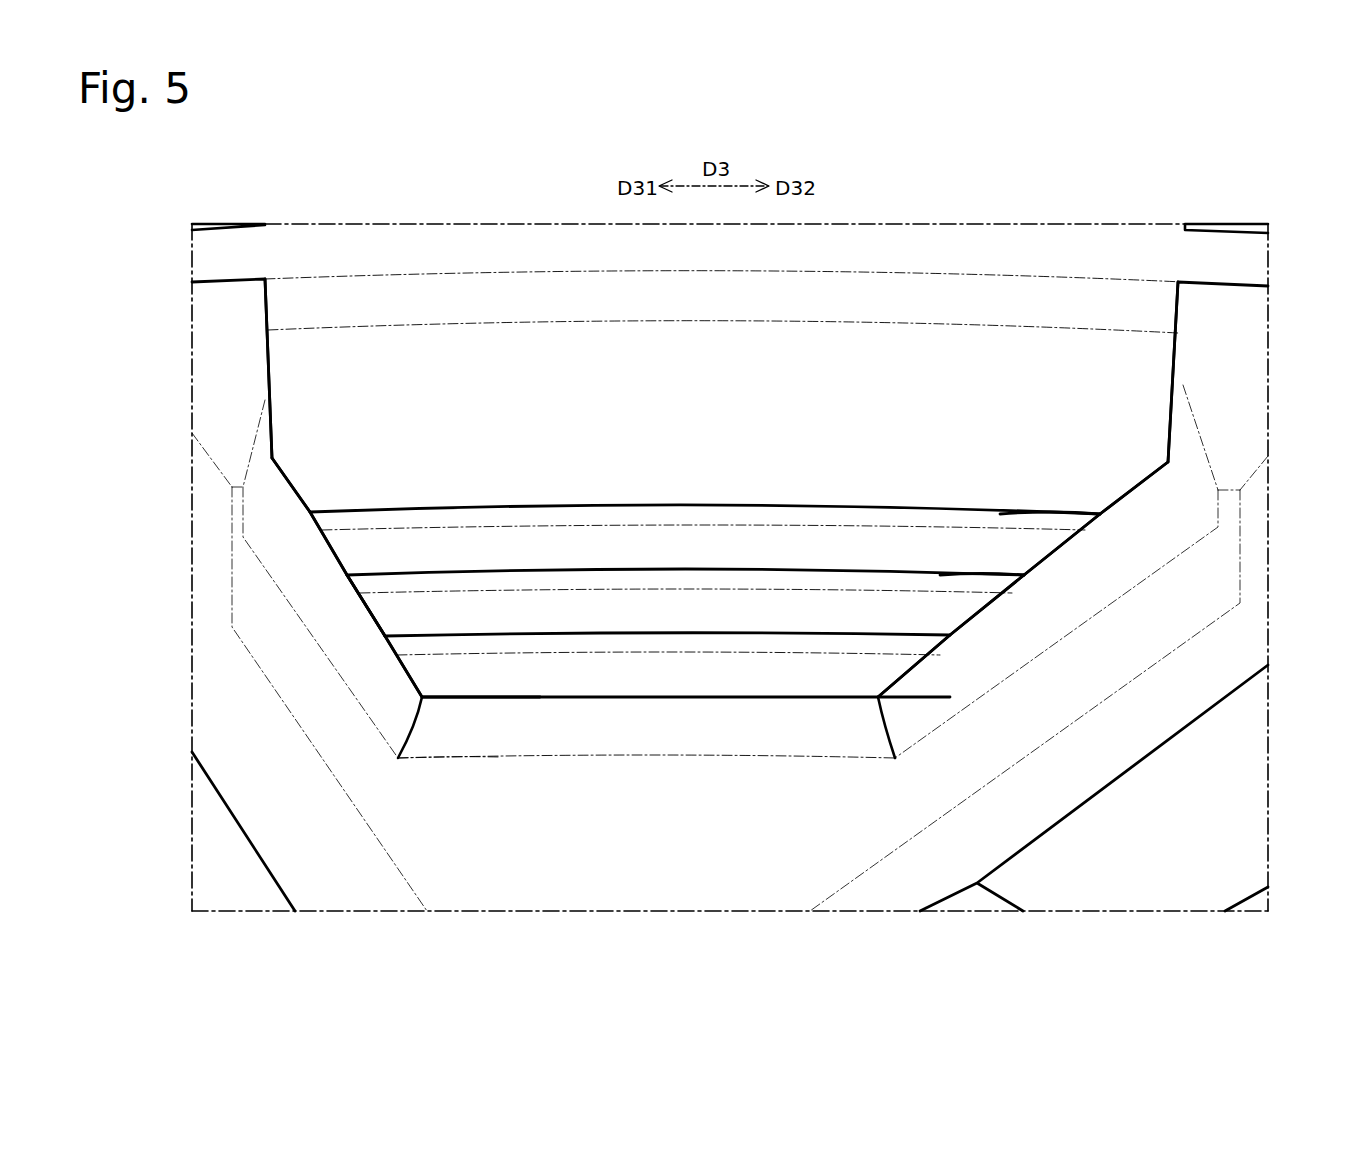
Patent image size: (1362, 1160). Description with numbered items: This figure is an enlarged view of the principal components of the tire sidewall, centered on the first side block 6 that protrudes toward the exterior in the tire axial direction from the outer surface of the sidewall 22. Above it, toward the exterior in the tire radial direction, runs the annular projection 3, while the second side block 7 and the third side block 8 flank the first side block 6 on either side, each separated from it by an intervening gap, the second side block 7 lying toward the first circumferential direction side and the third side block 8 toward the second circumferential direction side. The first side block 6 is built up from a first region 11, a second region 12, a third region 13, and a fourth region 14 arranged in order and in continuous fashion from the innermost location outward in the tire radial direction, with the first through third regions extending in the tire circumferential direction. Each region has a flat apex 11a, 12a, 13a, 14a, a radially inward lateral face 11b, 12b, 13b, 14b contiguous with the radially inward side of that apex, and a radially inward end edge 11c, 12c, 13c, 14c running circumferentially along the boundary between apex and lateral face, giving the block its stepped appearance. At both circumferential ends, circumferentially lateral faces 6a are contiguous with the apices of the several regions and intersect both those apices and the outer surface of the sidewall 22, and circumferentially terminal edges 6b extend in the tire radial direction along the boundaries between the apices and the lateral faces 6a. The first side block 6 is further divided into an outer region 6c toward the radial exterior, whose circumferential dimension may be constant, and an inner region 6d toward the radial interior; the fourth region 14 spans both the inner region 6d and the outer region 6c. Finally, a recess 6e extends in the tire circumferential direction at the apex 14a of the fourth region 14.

The annular projection 3 is at (232, 237).
The first side block 6 is at (634, 802).
The circumferentially lateral face 6a is at (383, 710).
The circumferentially terminal edge 6b is at (290, 487).
The outer region 6c is at (246, 411).
The inner region 6d is at (368, 639).
The recess 6e is at (423, 282).
The second side block 7 is at (200, 878).
The third side block 8 is at (1258, 838).
The first region 11 is at (600, 681).
The apex 11a is at (885, 678).
The radially inward lateral face 11b is at (465, 738).
The radially inward end edge 11c is at (513, 698).
The second region 12 is at (660, 617).
The apex 12a is at (960, 610).
The radially inward lateral face 12b is at (930, 645).
The radially inward end edge 12c is at (395, 638).
The third region 13 is at (735, 552).
The apex 13a is at (1045, 552).
The radially inward lateral face 13b is at (1005, 588).
The radially inward end edge 13c is at (355, 576).
The fourth region 14 is at (307, 362).
The apex 14a is at (1147, 352).
The radially inward lateral face 14b is at (1085, 522).
The radially inward end edge 14c is at (320, 513).
The sidewall 22 is at (700, 875).